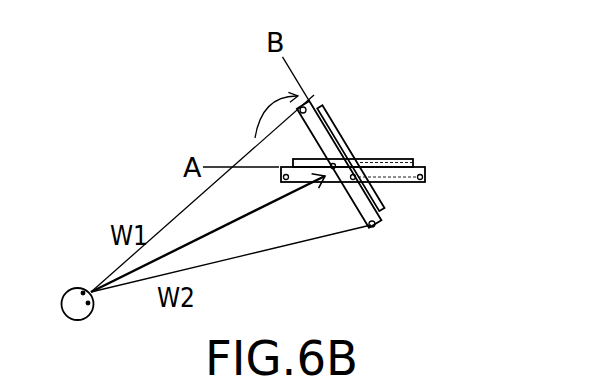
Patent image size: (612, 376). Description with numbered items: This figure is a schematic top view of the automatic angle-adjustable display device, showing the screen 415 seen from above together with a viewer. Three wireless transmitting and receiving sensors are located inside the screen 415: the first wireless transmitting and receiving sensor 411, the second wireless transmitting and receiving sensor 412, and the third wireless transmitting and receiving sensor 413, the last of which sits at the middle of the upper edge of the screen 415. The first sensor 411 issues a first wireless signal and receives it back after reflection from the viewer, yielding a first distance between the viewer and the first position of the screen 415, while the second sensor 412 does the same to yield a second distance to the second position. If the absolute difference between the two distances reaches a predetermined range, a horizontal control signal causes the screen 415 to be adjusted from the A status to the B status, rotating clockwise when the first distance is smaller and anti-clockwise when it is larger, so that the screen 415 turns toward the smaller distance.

The first wireless transmitting and receiving sensor 411 is at (305, 106).
The second wireless transmitting and receiving sensor 412 is at (375, 227).
The third wireless transmitting and receiving sensor 413 is at (340, 162).
The screen 415 is at (418, 164).